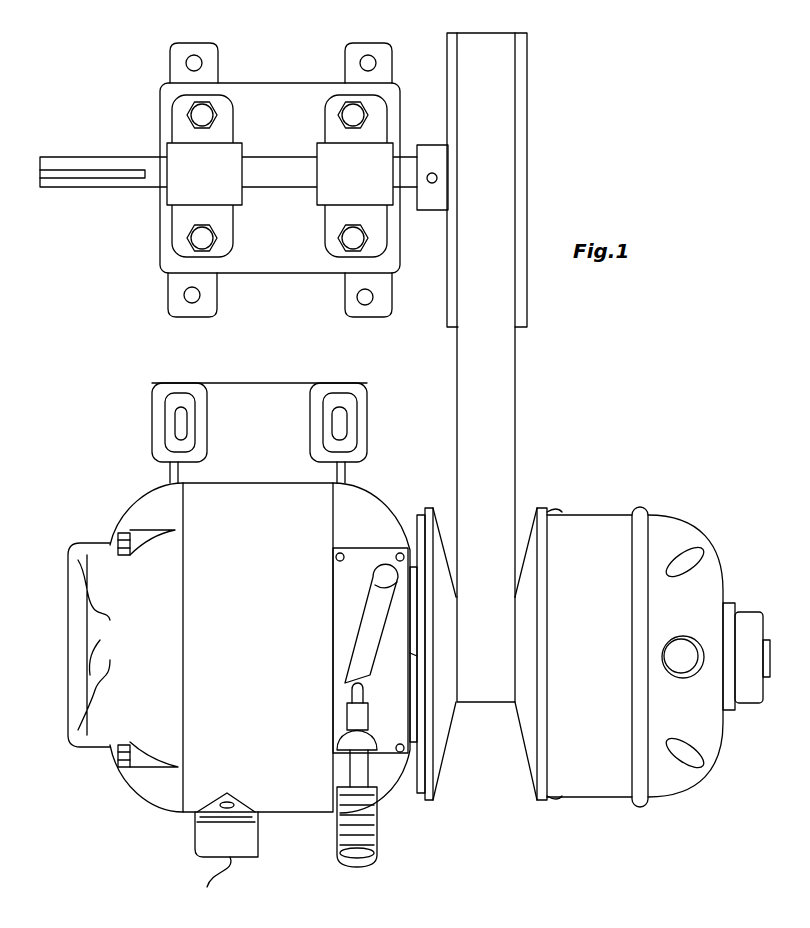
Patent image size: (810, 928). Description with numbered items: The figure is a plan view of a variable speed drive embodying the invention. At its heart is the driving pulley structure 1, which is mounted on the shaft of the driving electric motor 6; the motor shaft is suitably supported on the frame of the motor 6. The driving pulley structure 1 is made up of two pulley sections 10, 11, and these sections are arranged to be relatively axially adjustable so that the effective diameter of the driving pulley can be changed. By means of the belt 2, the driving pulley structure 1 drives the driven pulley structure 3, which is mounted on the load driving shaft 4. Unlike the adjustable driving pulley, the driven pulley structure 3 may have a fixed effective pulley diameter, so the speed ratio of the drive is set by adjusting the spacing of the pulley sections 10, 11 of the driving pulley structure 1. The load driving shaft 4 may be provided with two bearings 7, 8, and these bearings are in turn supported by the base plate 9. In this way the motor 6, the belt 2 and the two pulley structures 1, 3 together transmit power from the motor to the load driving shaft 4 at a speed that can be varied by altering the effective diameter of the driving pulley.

The driving pulley structure 1 is at (460, 757).
The belt 2 is at (518, 390).
The driven pulley structure 3 is at (530, 73).
The load driving shaft 4 is at (93, 157).
The driving electric motor 6 is at (265, 483).
The bearing 7 is at (192, 207).
The bearing 8 is at (345, 208).
The base plate 9 is at (293, 82).
The pulley section 10 is at (435, 780).
The pulley section 11 is at (528, 780).